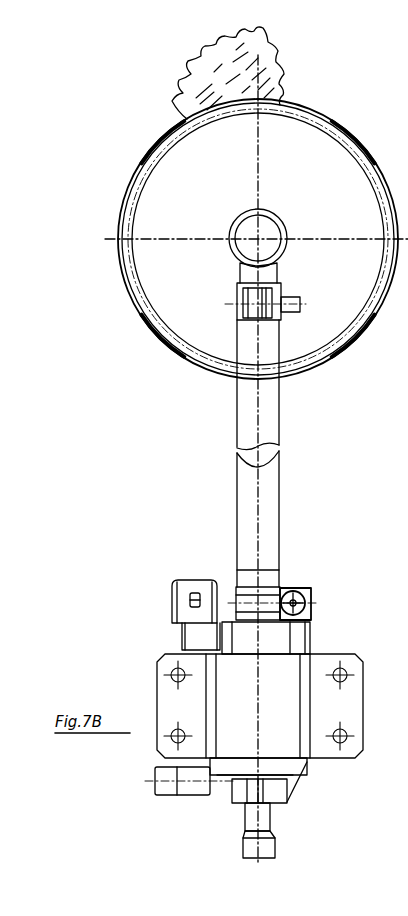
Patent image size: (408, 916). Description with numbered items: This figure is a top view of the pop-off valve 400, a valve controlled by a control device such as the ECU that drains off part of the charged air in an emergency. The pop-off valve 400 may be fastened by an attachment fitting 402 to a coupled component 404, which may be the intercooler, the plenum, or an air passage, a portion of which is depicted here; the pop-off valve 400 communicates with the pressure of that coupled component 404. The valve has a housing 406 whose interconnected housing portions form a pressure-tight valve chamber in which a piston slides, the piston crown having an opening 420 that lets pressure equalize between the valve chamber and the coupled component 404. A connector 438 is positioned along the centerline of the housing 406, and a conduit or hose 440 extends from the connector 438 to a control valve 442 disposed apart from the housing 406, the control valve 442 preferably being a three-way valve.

The pop-off valve 400 is at (220, 458).
The attachment fitting 402 is at (355, 297).
The coupled component 404 is at (258, 52).
The housing 406 is at (215, 239).
The opening 420 is at (407, 138).
The connector 438 is at (263, 232).
The conduit or hose 440 is at (279, 427).
The control valve 442 is at (287, 731).